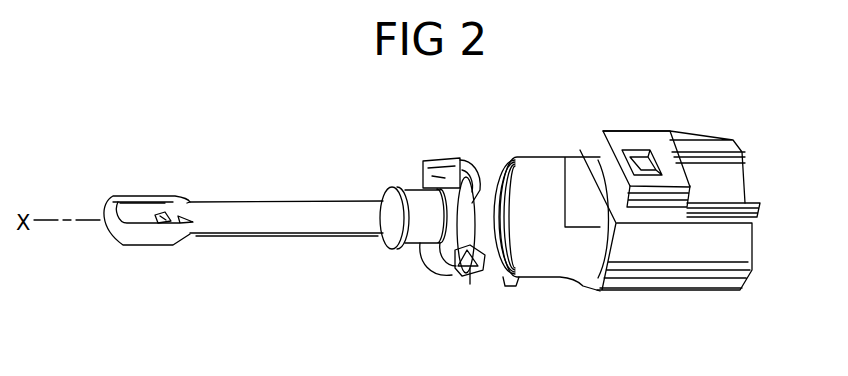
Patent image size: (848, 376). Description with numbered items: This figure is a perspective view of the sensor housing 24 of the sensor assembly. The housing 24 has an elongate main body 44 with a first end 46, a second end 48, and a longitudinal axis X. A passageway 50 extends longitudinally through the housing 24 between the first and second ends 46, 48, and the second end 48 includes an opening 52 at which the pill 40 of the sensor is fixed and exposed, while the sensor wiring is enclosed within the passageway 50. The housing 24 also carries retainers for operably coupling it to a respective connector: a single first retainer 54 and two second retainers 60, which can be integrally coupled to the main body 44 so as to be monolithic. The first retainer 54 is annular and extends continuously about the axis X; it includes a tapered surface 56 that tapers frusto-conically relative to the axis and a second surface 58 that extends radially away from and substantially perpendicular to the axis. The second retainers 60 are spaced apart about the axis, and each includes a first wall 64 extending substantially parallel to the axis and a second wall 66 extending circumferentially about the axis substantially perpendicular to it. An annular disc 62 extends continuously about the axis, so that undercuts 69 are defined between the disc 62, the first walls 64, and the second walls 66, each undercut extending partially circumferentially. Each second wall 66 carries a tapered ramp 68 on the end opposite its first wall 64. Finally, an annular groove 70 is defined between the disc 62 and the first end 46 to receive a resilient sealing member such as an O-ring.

The sensor housing 24 is at (654, 110).
The pill 40 is at (146, 212).
The main body 44 is at (566, 273).
The first end 46 is at (737, 251).
The second end 48 is at (148, 240).
The passageway 50 is at (760, 246).
The opening 52 is at (133, 218).
The first retainer 54 is at (385, 183).
The tapered surface 56 is at (392, 238).
The second surface 58 is at (410, 270).
The second retainers 60 is at (431, 158).
The annular disc 62 is at (467, 170).
The first wall 64 is at (421, 170).
The second wall 66 is at (450, 247).
The tapered ramp 68 is at (484, 160).
The undercuts 69 is at (495, 284).
The annular groove 70 is at (513, 193).